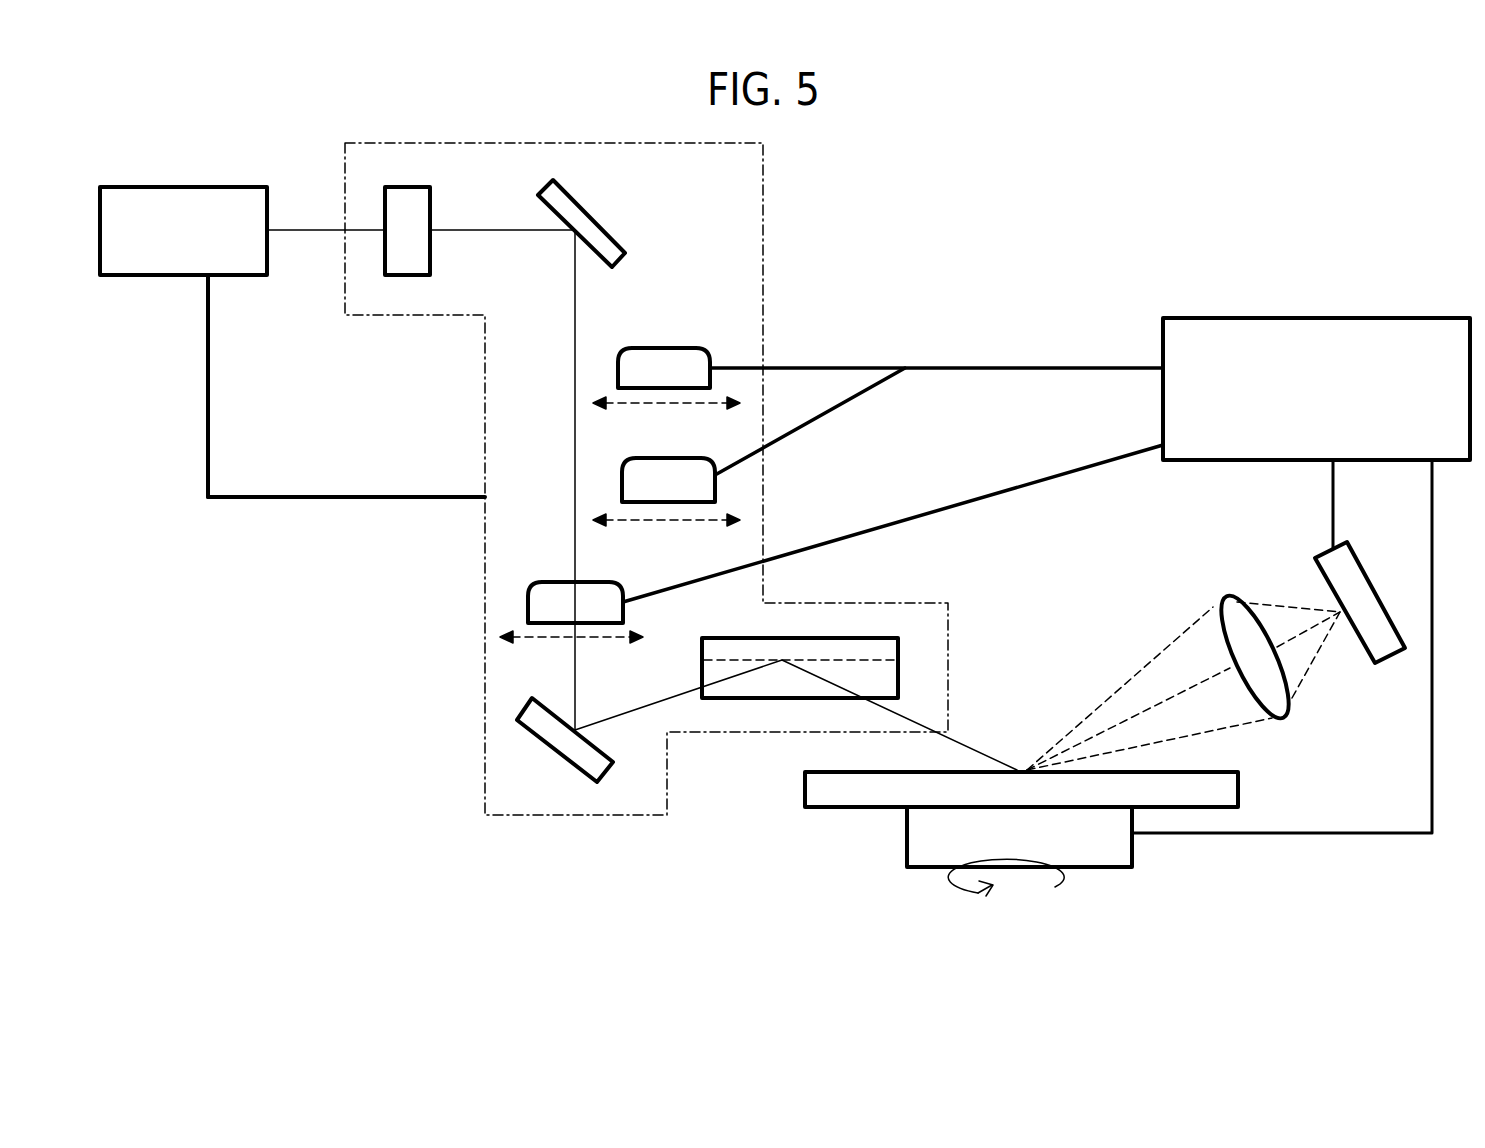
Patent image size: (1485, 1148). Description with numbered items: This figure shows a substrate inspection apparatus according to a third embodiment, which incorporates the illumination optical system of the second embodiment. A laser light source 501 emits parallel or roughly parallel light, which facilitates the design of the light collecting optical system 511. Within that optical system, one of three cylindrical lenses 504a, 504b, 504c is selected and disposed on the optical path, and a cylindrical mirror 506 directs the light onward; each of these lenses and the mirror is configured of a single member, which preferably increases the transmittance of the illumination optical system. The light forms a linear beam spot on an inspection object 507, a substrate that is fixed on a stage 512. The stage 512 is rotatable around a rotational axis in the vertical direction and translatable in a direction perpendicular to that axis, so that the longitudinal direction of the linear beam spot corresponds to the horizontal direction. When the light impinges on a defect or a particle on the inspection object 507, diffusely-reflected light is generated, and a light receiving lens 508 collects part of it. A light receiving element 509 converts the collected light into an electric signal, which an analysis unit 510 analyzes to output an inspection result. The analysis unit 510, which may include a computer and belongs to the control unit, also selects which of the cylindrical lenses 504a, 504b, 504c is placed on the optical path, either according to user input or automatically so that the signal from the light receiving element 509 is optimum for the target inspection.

The laser light source 501 is at (292, 342).
The cylindrical lens 504a is at (878, 357).
The cylindrical lens 504b is at (749, 447).
The cylindrical lens 504c is at (769, 544).
The cylindrical mirror 506 is at (869, 651).
The inspection object 507 is at (991, 834).
The light receiving lens 508 is at (1194, 703).
The light receiving element 509 is at (1361, 654).
The analysis unit 510 is at (1301, 524).
The light collecting optical system 511 is at (646, 479).
The stage 512 is at (983, 873).